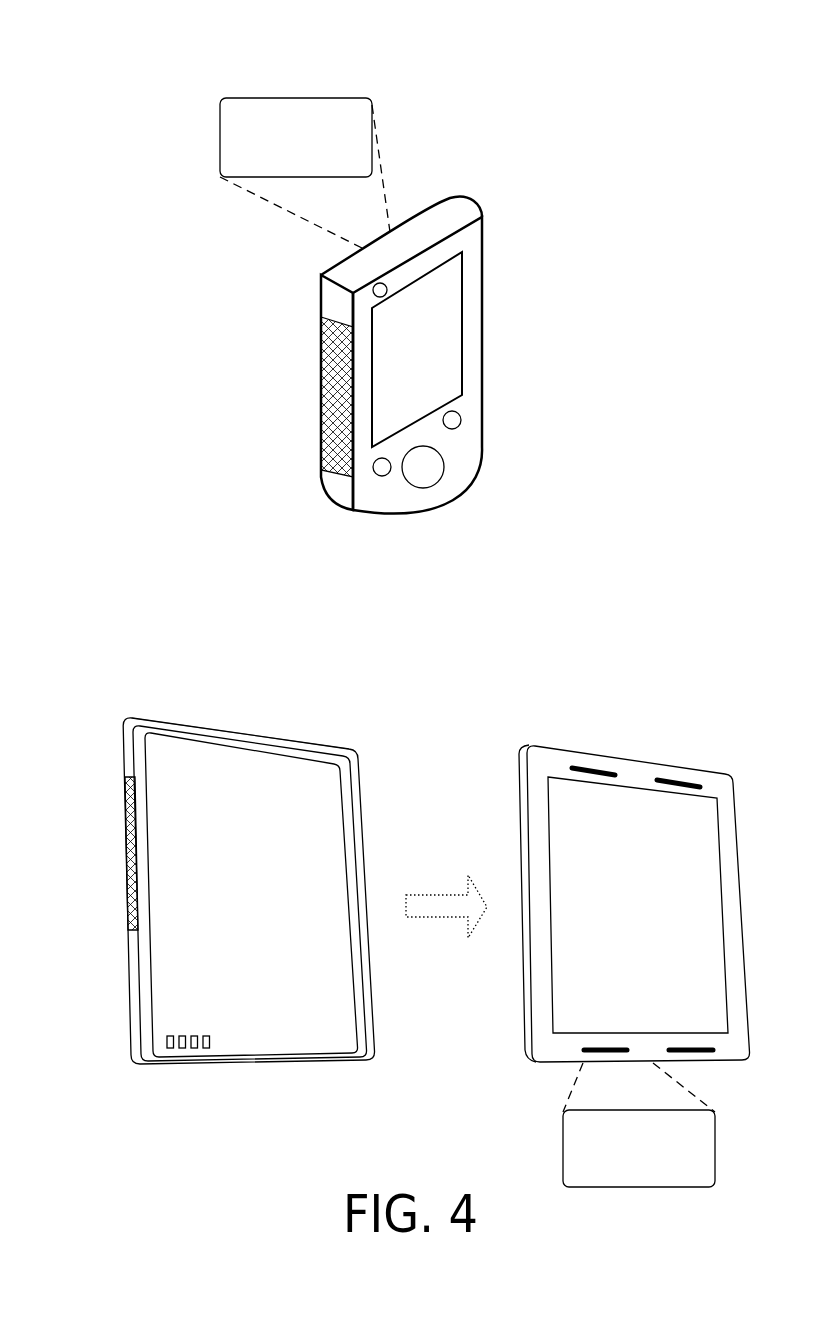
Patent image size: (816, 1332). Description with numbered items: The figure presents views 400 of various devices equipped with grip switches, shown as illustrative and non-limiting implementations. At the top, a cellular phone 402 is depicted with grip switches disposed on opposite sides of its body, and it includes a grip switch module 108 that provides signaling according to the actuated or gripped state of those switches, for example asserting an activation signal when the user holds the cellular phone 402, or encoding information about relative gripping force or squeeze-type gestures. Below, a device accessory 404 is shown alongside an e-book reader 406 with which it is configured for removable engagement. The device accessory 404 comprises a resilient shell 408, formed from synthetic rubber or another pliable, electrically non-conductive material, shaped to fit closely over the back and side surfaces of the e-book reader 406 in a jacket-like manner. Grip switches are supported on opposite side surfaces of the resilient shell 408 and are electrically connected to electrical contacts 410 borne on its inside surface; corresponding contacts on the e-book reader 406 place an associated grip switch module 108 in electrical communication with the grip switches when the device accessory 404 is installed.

The views 400 is at (660, 60).
The cellular phone 402 is at (455, 204).
The grip switch module 108 is at (282, 170).
The device accessory 404 is at (90, 645).
The resilient shell 408 is at (242, 727).
The electrical contacts 410 is at (188, 1083).
The e-book reader 406 is at (604, 752).